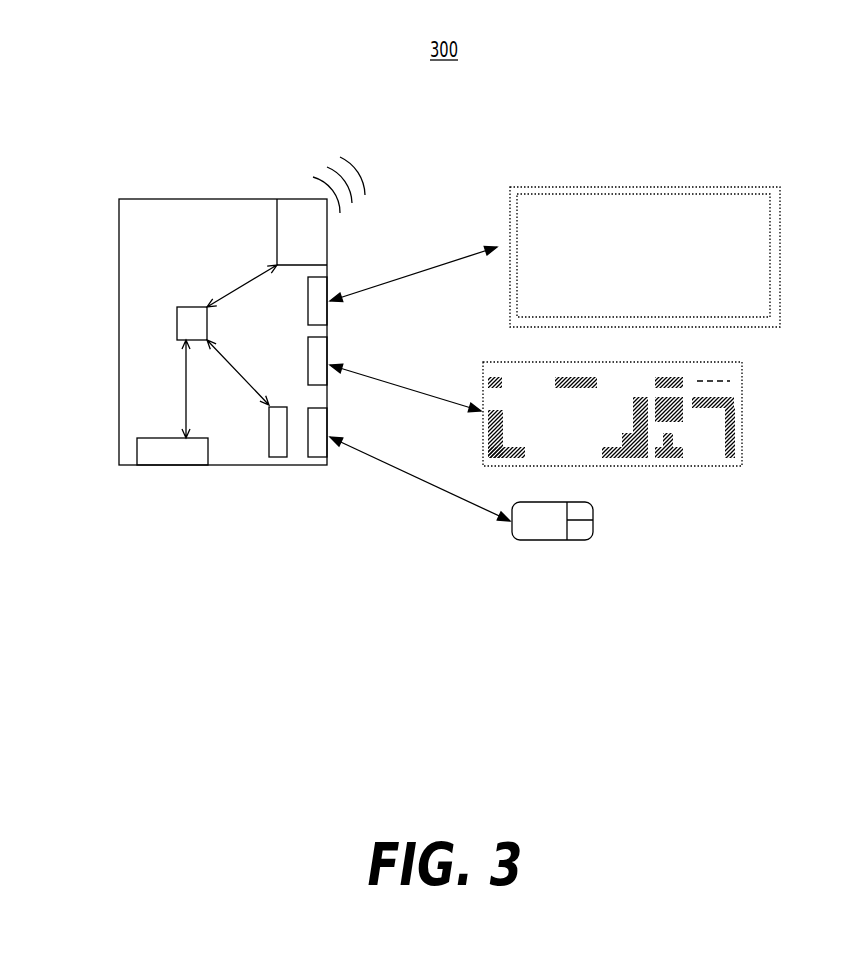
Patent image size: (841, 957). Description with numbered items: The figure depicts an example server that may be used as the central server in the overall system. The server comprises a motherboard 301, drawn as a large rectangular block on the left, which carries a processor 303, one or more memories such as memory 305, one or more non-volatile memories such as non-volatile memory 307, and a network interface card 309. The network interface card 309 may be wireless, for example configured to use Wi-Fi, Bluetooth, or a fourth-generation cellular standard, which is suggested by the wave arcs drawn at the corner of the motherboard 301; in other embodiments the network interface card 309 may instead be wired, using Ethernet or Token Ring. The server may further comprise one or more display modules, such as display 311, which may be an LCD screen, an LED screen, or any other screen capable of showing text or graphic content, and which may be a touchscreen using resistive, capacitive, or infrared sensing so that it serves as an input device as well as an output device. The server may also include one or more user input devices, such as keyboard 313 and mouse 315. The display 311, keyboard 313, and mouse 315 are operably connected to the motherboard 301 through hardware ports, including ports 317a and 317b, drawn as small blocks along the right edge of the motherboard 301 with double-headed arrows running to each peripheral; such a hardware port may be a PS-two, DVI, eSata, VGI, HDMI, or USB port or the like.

The motherboard 301 is at (128, 313).
The processor 303 is at (182, 310).
The memory 305 is at (278, 447).
The non-volatile memory 307 is at (177, 453).
The network interface card 309 is at (280, 250).
The display 311 is at (566, 206).
The keyboard 313 is at (737, 386).
The mouse 315 is at (585, 510).
The port 317a is at (317, 293).
The port 317b is at (317, 352).